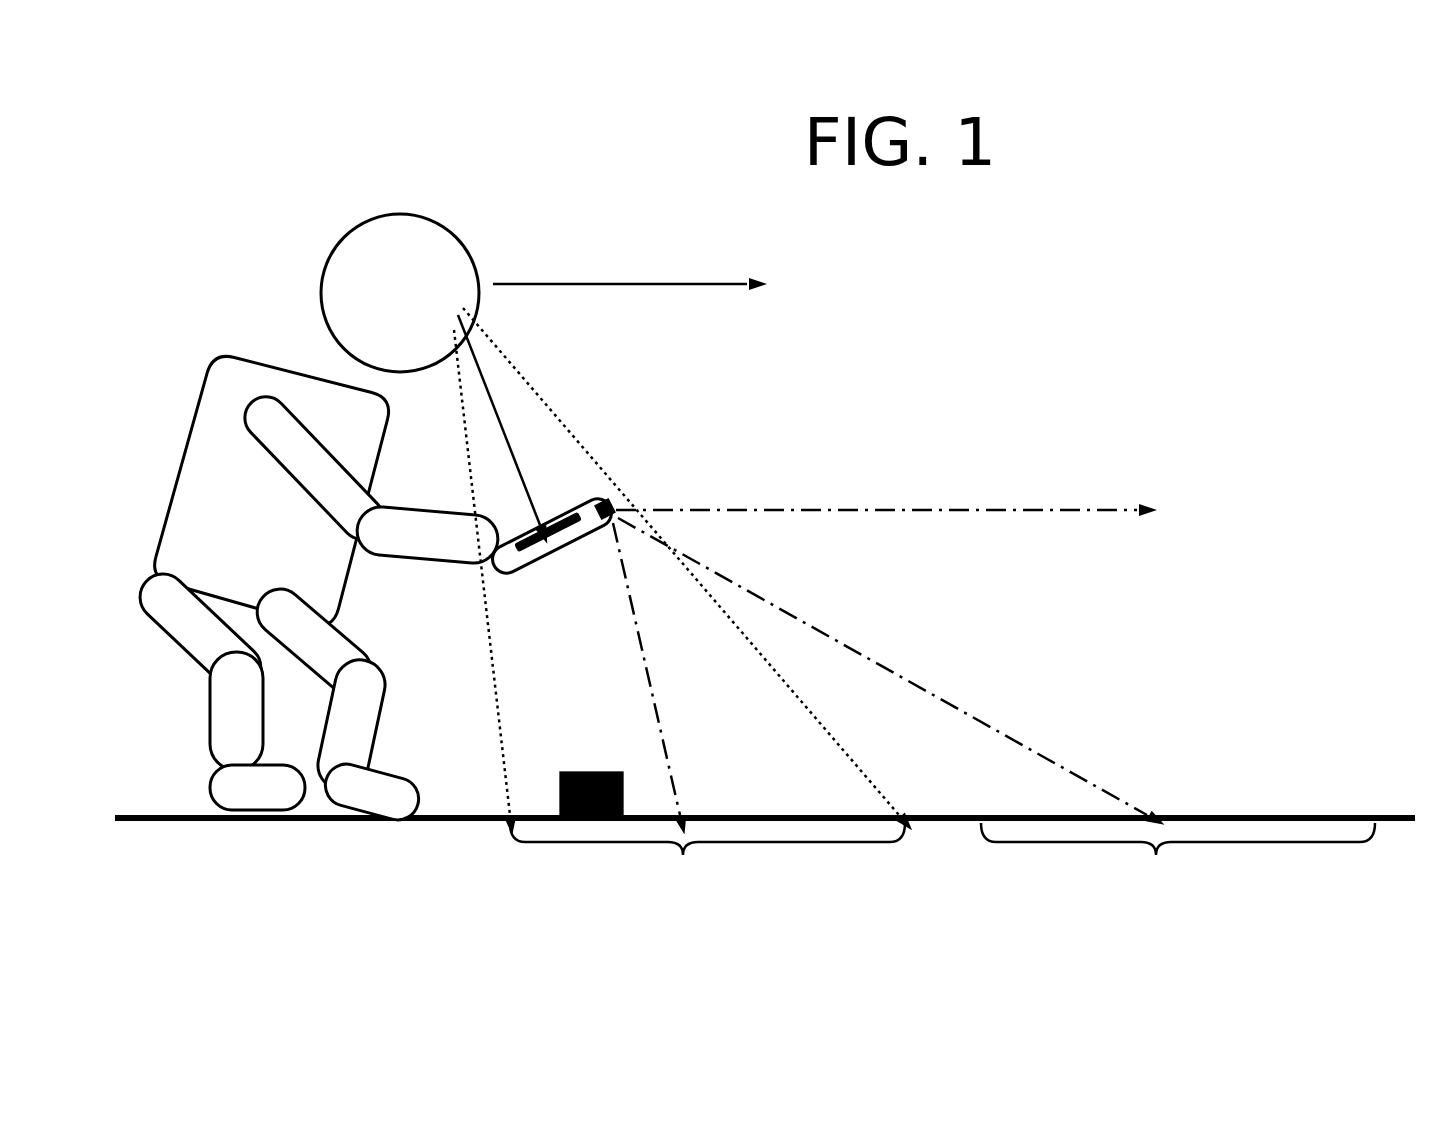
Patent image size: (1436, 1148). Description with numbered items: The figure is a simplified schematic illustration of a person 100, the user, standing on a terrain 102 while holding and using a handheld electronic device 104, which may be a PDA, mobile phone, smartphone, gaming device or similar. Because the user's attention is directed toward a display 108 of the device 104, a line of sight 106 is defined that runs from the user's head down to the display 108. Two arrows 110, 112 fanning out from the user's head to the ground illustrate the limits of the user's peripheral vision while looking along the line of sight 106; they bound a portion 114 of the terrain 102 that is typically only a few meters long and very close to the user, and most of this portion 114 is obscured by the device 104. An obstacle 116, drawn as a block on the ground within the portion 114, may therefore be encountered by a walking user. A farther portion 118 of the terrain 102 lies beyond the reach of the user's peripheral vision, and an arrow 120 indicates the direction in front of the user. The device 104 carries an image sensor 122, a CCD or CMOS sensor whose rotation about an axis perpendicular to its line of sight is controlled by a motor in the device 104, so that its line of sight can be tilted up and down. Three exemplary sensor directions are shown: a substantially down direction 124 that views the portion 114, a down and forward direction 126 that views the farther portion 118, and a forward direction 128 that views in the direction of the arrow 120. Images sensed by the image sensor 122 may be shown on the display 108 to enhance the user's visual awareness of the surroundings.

The person 100 is at (203, 310).
The terrain 102 is at (127, 813).
The handheld electronic device 104 is at (503, 576).
The line of sight 106 is at (512, 450).
The display 108 is at (556, 519).
The arrow 110 is at (499, 711).
The arrow 112 is at (821, 722).
The portion of terrain 114 is at (707, 855).
The obstacle 116 is at (615, 772).
The portion of terrain 118 is at (1178, 855).
The arrow 120 is at (682, 285).
The image sensor 122 is at (610, 500).
The down direction 124 is at (636, 613).
The down and forward direction 126 is at (948, 702).
The forward direction 128 is at (826, 508).